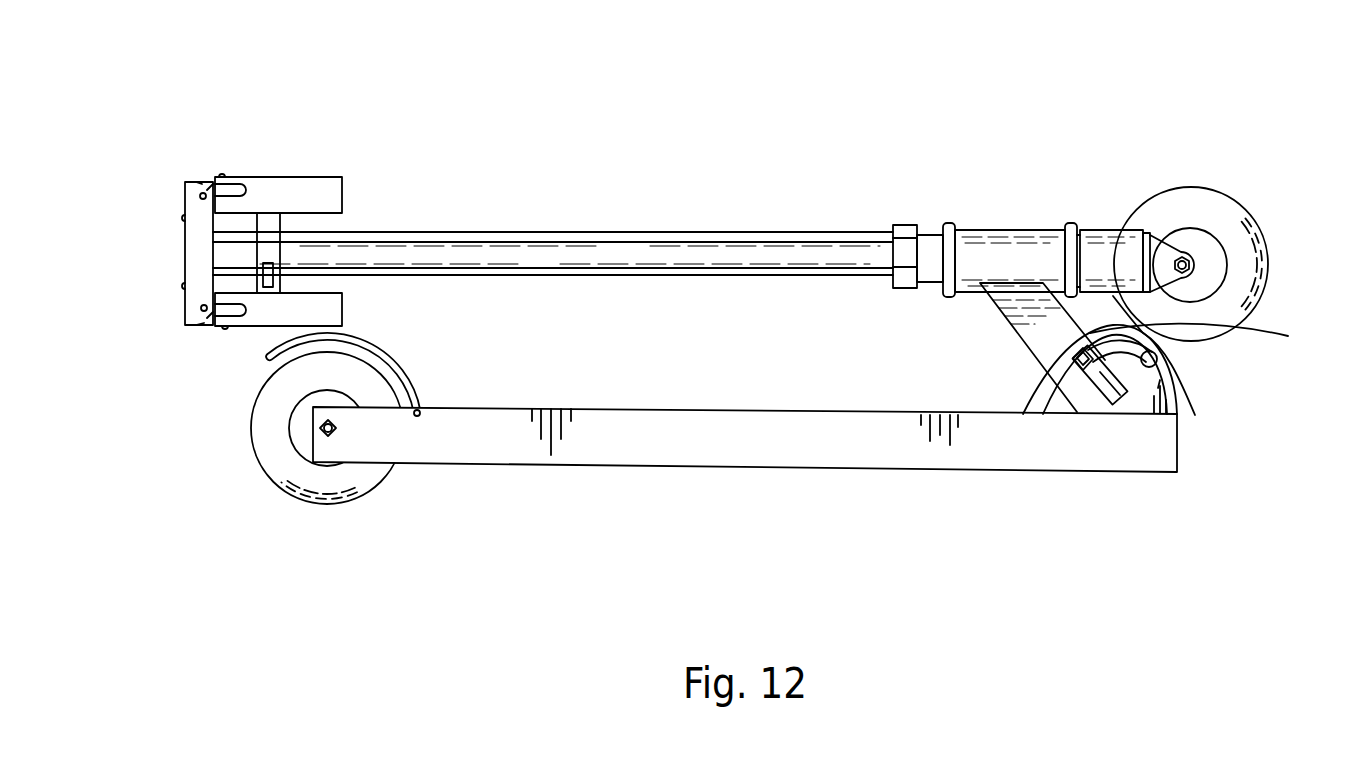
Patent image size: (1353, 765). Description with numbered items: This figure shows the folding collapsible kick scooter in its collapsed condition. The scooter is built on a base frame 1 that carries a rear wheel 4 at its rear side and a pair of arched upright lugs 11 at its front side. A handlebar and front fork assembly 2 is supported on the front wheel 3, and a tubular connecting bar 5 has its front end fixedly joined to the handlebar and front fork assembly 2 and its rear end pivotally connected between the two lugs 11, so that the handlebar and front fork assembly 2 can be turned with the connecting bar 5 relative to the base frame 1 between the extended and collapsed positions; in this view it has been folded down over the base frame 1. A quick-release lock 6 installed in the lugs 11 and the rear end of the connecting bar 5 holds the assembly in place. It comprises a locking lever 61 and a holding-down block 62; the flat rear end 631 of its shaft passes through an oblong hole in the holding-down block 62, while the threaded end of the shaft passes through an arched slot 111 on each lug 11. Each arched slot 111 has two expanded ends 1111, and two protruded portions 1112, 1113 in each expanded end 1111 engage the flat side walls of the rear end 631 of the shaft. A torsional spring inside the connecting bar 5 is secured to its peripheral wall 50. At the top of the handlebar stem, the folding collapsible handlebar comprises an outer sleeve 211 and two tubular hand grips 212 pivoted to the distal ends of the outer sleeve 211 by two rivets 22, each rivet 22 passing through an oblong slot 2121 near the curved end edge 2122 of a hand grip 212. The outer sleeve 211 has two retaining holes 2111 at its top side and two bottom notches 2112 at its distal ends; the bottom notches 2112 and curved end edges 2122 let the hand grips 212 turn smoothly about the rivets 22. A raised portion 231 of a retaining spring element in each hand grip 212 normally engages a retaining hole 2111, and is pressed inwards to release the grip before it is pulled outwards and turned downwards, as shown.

The base frame 1 is at (793, 472).
The handlebar and front fork assembly 2 is at (670, 232).
The front wheel 3 is at (1218, 183).
The rear wheel 4 is at (373, 500).
The connecting bar 5 is at (998, 315).
The quick-release lock 6 is at (1120, 406).
The arched upright lugs 11 is at (1040, 387).
The rivets 22 is at (199, 195).
The peripheral wall 50 is at (1065, 315).
The locking lever 61 is at (1116, 412).
The holding-down block 62 is at (1078, 371).
The arched slot 111 is at (1211, 328).
The outer sleeve 211 is at (185, 250).
The tubular hand grips 212 is at (342, 192).
The raised portion 231 is at (222, 175).
The rear end of shaft 631 is at (1088, 366).
The expanded ends 1111 is at (1195, 415).
The protruded portion 1112 is at (1155, 357).
The protruded portion 1113 is at (1158, 388).
The retaining holes 2111 is at (185, 217).
The bottom notches 2112 is at (197, 312).
The oblong slot 2121 is at (252, 177).
The curved end edge 2122 is at (198, 180).